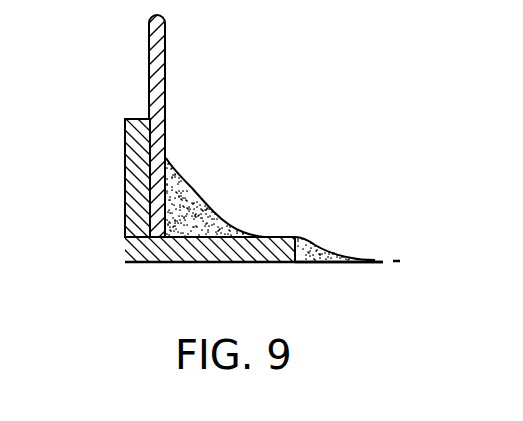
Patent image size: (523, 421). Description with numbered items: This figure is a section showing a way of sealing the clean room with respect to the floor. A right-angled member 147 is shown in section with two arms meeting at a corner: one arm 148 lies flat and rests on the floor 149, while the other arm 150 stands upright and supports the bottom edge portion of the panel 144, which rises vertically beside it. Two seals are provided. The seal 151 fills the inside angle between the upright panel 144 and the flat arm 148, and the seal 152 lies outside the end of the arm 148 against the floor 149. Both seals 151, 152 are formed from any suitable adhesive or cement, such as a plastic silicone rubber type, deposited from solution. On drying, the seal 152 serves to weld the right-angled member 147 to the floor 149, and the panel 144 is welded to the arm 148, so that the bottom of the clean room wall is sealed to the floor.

The panel 144 is at (165, 52).
The right-angled member 147 is at (147, 263).
The arm 148 is at (277, 263).
The floor 149 is at (373, 260).
The arm 150 is at (125, 190).
The seal 151 is at (207, 200).
The seal 152 is at (320, 242).